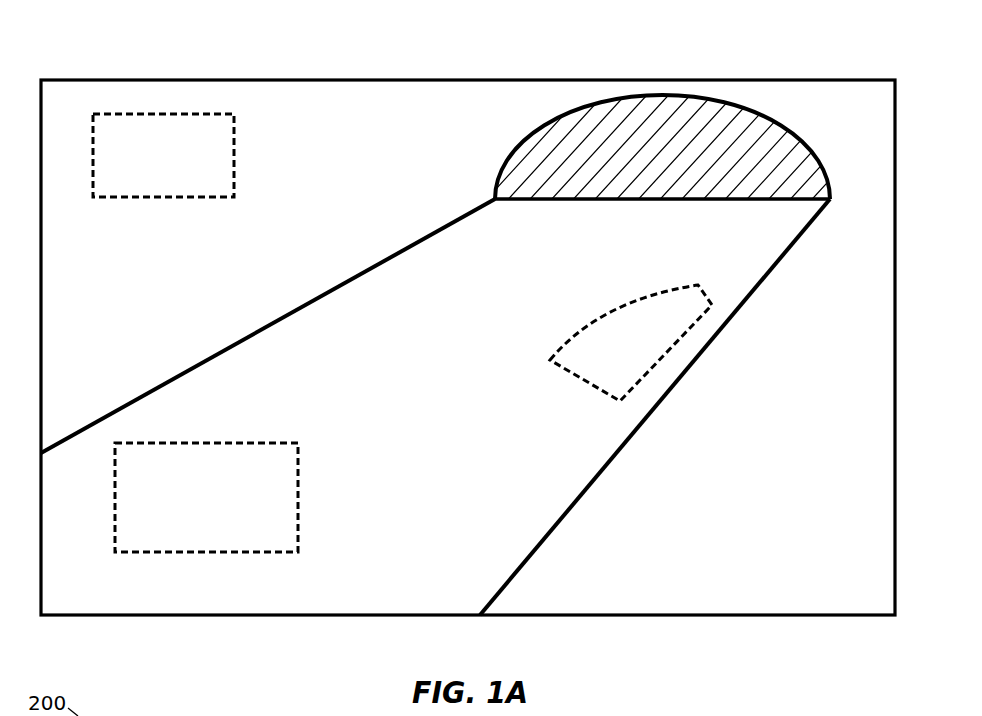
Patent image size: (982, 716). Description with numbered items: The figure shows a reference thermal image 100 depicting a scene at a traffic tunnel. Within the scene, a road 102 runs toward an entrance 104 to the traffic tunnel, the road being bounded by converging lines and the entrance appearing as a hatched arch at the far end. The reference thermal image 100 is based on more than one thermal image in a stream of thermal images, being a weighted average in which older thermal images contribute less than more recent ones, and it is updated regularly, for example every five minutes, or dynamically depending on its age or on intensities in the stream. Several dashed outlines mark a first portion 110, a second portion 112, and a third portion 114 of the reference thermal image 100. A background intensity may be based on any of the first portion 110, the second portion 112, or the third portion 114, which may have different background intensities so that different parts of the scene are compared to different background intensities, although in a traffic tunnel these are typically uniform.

The reference thermal image 100 is at (101, 58).
The road 102 is at (482, 575).
The entrance 104 is at (535, 163).
The first portion 110 is at (200, 174).
The second portion 112 is at (255, 525).
The third portion 114 is at (617, 365).